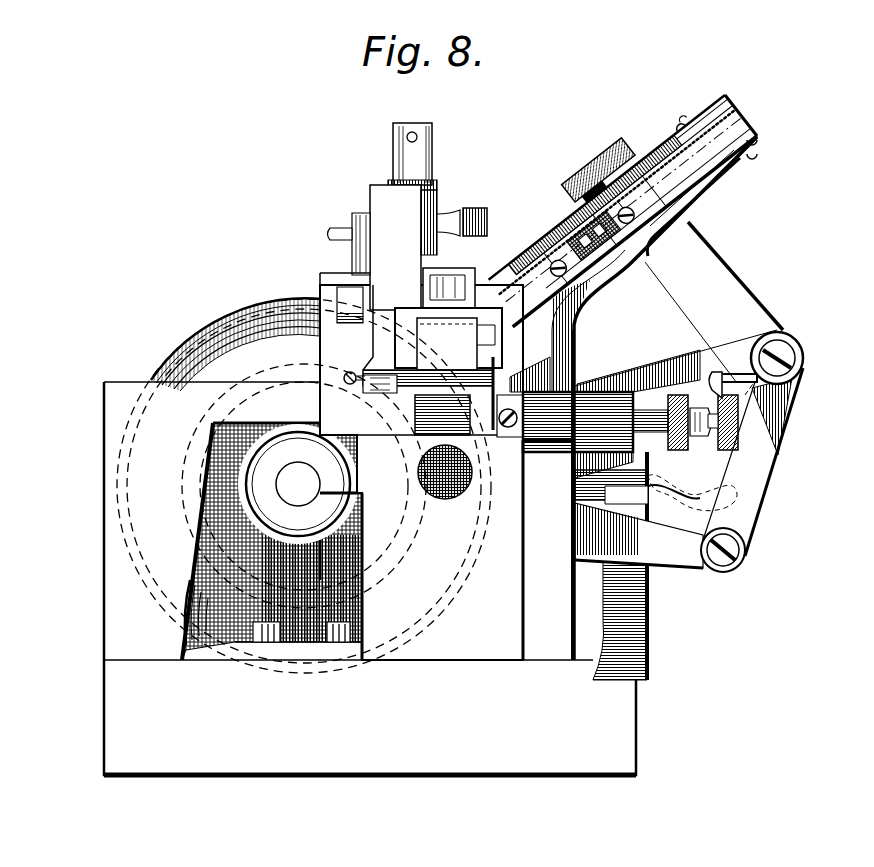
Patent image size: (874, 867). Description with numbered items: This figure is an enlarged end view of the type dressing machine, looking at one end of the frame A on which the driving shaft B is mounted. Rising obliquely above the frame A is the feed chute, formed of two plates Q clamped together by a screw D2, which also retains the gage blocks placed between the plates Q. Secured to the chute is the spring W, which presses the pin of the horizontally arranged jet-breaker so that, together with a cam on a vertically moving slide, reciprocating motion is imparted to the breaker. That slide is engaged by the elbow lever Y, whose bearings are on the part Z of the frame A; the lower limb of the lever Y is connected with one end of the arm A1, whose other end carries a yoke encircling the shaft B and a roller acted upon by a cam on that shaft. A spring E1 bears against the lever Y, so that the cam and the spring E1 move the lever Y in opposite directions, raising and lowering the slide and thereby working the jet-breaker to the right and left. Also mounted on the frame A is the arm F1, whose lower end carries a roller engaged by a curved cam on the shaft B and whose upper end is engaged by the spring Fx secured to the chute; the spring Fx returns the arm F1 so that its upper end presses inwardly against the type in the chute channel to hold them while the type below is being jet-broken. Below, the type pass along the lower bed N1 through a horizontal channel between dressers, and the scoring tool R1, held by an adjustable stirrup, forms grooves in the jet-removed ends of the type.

The frame A is at (353, 552).
The driving shaft B is at (256, 479).
The scoring or grooving tool R1 is at (400, 380).
The bed N1 is at (443, 372).
The screw D2 is at (586, 172).
The spring W is at (568, 224).
The plates Q is at (678, 132).
The spring Fx is at (702, 202).
The arm F1 is at (587, 288).
The elbow lever Y is at (714, 302).
The part of the frame Z is at (648, 376).
The spring E1 is at (800, 370).
The arm A1 is at (660, 537).